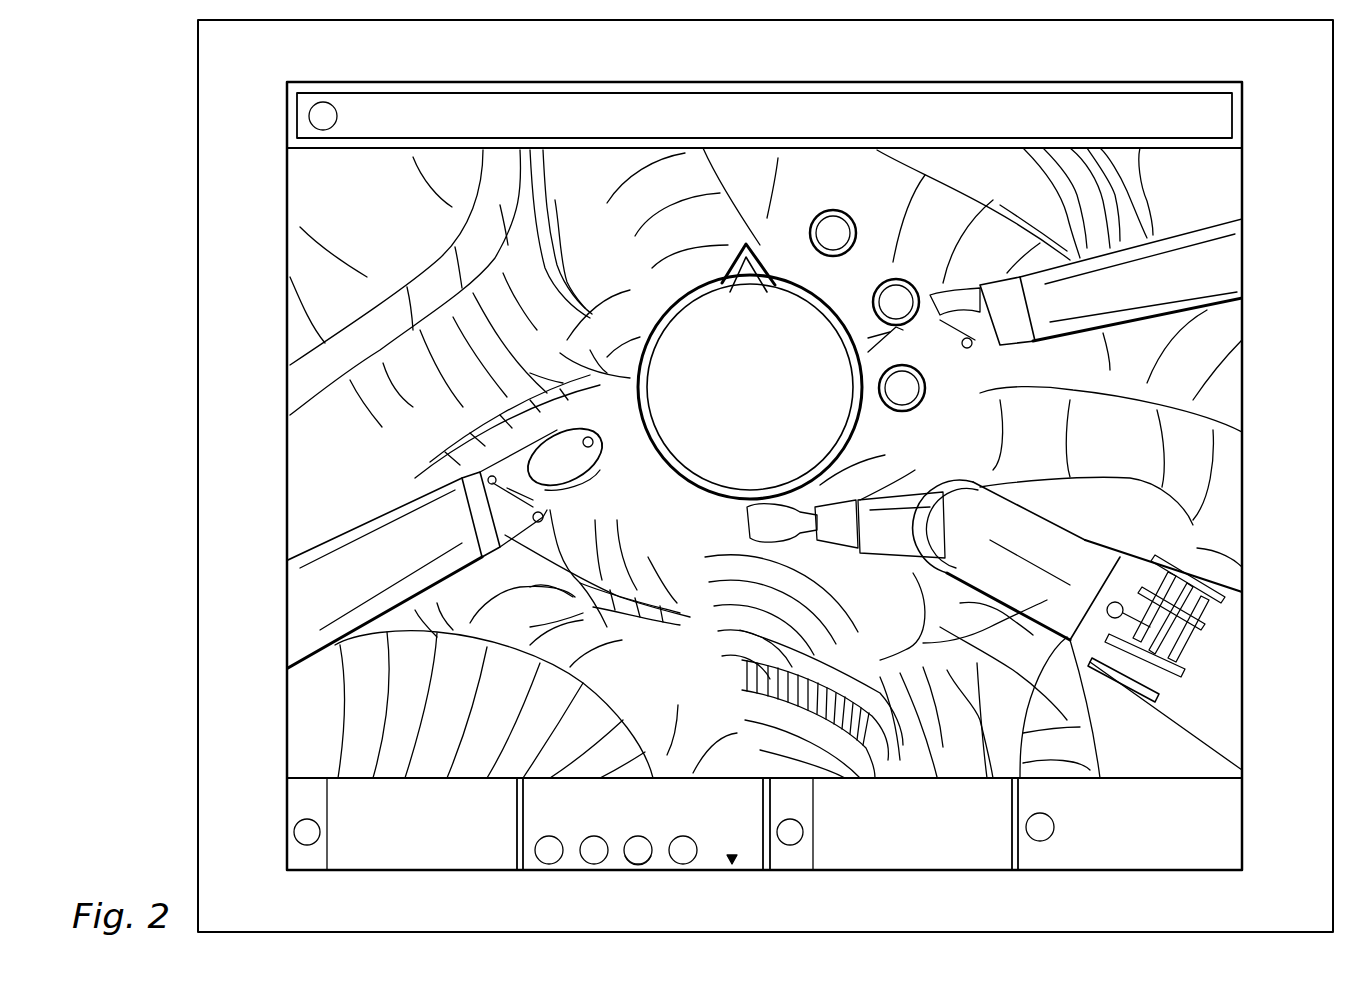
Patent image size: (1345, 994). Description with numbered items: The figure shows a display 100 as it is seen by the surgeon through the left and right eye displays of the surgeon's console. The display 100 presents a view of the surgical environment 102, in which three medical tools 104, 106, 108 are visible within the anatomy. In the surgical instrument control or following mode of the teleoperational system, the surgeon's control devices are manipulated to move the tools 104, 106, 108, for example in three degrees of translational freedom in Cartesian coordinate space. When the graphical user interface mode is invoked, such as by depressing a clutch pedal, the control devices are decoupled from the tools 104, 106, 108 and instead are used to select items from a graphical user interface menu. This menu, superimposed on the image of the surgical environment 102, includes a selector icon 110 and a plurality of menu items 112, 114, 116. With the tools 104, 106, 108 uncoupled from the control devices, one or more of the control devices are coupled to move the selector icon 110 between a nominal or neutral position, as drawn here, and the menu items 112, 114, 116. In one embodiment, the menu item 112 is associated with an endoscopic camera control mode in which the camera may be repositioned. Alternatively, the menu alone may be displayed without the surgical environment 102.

The display 100 is at (192, 364).
The surgical environment 102 is at (300, 204).
The medical tool 104 is at (1242, 257).
The medical tool 106 is at (296, 612).
The medical tool 108 is at (1242, 686).
The selector icon 110 is at (700, 498).
The menu item 112 is at (843, 210).
The menu item 114 is at (907, 279).
The menu item 116 is at (920, 409).